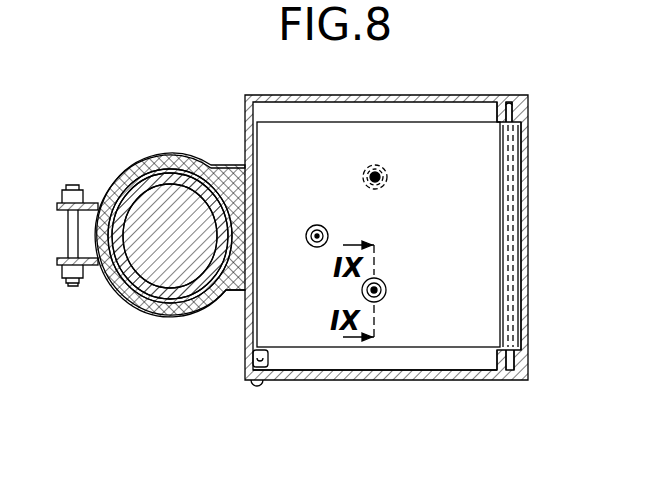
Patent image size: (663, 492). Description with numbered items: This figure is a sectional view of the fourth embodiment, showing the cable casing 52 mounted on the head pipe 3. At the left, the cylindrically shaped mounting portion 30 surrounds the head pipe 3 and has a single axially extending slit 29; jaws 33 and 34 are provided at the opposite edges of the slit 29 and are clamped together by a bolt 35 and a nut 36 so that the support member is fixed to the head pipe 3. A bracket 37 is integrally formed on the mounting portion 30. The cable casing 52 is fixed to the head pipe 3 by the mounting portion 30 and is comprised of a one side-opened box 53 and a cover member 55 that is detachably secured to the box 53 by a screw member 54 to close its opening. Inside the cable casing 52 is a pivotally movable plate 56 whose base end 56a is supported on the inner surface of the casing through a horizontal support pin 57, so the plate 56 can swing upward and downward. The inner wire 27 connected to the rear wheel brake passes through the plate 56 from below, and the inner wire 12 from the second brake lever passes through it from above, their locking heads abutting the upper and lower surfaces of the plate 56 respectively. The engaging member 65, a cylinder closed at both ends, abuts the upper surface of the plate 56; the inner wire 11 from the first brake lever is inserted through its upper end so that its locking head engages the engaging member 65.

The head pipe 3 is at (119, 300).
The inner wire 11 is at (379, 284).
The inner wire 12 is at (375, 166).
The inner wire 27 is at (317, 224).
The slit 29 is at (58, 234).
The mounting portion 30 is at (176, 157).
The jaw 33 is at (60, 263).
The jaw 34 is at (62, 206).
The bolt 35 is at (74, 286).
The nut 36 is at (78, 197).
The bracket 37 is at (388, 181).
The cable casing 52 is at (577, 385).
The box 53 is at (520, 332).
The screw member 54 is at (256, 386).
The cover member 55 is at (483, 372).
The pivotally movable plate 56 is at (348, 132).
The base end 56a is at (515, 183).
The horizontal support pin 57 is at (510, 240).
The engaging member 65 is at (387, 293).